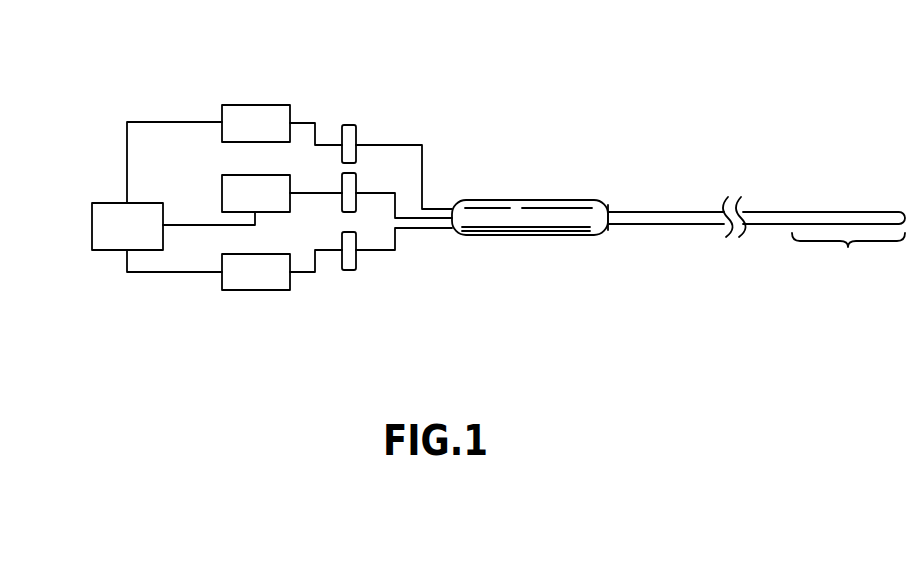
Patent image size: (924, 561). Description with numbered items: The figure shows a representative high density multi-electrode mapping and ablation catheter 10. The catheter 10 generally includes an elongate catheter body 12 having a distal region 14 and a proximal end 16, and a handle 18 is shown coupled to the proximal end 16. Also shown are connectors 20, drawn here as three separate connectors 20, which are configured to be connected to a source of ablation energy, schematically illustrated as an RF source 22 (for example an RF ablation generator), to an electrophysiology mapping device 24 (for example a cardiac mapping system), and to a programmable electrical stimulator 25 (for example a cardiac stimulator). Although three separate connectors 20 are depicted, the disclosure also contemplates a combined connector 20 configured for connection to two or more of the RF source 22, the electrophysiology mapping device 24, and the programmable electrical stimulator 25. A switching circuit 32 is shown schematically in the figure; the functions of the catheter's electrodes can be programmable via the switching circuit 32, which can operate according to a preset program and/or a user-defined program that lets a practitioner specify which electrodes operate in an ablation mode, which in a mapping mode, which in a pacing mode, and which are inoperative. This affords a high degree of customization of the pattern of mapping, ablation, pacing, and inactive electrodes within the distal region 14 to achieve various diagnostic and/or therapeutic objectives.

The high density multi-electrode mapping and ablation catheter 10 is at (678, 196).
The elongate catheter body 12 is at (776, 210).
The distal region 14 is at (848, 256).
The proximal end 16 is at (610, 210).
The handle 18 is at (497, 236).
The connectors 20 is at (356, 130).
The RF source 22 is at (261, 104).
The electrophysiology mapping device 24 is at (222, 188).
The programmable electrical stimulator 25 is at (246, 291).
The switching circuit 32 is at (92, 223).